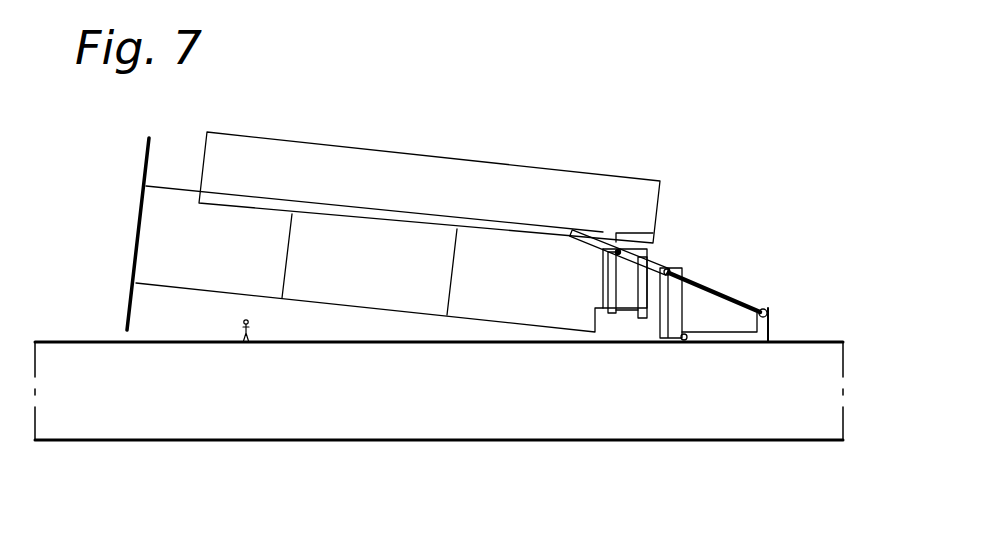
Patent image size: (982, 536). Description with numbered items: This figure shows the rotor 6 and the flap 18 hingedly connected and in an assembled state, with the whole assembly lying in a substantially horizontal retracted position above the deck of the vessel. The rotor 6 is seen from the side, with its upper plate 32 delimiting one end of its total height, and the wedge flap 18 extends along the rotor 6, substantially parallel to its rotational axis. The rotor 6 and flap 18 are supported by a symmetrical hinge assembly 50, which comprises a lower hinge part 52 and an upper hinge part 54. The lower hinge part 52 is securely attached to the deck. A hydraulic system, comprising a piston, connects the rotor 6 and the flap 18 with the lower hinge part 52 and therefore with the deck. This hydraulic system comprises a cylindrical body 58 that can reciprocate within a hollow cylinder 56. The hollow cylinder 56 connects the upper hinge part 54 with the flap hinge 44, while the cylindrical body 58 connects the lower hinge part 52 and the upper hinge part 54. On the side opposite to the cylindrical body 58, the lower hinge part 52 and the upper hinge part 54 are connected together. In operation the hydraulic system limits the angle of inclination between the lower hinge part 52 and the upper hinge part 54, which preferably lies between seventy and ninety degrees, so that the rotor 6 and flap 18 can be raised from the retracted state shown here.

The upper plate 32 is at (145, 162).
The rotor 6 is at (164, 188).
The flap 18 is at (432, 156).
The flap hinge 44 is at (659, 262).
The symmetrical hinge assembly 50 is at (756, 224).
The hollow cylinder 56 is at (684, 267).
The cylindrical body 58 is at (727, 288).
The lower hinge part 52 is at (769, 328).
The upper hinge part 54 is at (650, 318).